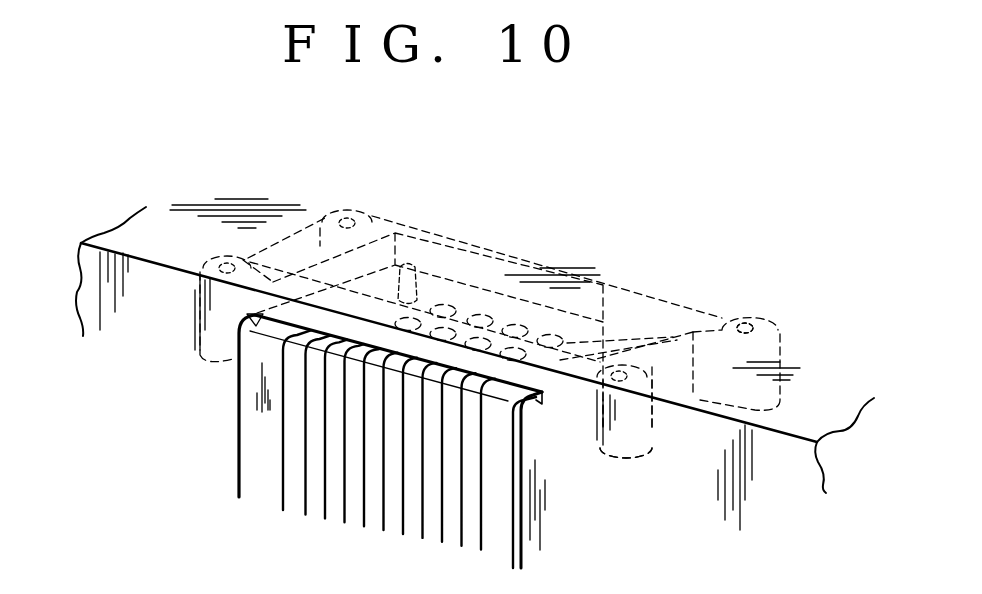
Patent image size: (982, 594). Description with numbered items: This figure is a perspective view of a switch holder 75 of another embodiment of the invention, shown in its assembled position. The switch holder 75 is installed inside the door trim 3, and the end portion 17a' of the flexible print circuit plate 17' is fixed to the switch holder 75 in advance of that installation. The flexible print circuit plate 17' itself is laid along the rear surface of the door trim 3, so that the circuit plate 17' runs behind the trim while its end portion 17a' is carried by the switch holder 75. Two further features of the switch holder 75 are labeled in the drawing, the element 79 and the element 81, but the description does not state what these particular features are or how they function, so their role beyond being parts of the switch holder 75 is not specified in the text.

The door trim 3 is at (777, 473).
The flexible print circuit plate 17' is at (327, 441).
The end portion of the circuit plate 17a' is at (611, 452).
The switch holder 75 is at (616, 238).
The mounting hole 79 is at (780, 327).
The positioning pin 81 is at (416, 282).